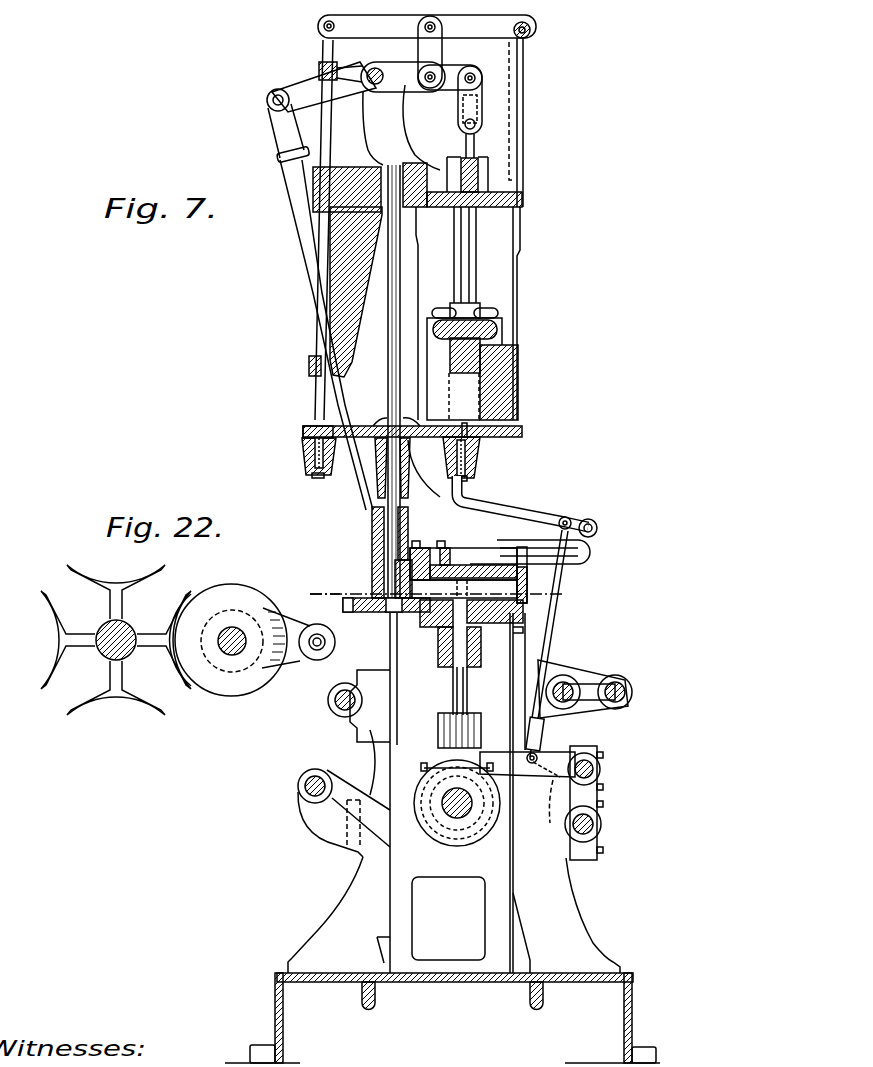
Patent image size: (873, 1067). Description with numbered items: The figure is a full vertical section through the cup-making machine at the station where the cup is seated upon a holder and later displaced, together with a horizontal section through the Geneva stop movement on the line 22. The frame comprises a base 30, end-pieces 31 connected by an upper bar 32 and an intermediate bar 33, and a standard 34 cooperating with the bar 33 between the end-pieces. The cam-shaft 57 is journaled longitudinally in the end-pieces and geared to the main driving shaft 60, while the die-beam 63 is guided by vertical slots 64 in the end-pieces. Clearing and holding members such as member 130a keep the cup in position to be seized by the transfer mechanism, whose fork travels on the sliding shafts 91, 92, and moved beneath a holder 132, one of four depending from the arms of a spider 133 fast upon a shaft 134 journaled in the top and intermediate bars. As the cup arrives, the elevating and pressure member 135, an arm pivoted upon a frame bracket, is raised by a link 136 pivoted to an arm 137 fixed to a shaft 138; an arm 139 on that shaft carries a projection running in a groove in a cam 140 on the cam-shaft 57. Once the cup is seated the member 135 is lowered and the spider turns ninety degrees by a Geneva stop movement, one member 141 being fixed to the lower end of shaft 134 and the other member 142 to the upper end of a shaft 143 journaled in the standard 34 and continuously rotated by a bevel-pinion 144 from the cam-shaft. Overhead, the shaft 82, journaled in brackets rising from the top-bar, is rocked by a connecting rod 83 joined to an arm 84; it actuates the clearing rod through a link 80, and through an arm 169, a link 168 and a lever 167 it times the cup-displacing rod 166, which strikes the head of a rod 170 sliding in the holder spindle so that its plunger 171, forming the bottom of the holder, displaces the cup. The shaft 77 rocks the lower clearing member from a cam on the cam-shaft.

In FIG. 7, the lever 167 is at (551, 19).
In FIG. 7, the link 168 is at (527, 57).
In FIG. 7, the arm 169 is at (400, 88).
In FIG. 7, the shaft 82 is at (361, 72).
In FIG. 7, the arm 84 is at (268, 100).
In FIG. 7, the connecting rod 83 is at (300, 246).
In FIG. 7, the link 80 is at (473, 97).
In FIG. 7, the upper bar 32 is at (523, 203).
In FIG. 7, the vertical slot 64 is at (486, 248).
In FIG. 7, the end-piece 31 is at (505, 296).
In FIG. 7, the clearing and holding member 130a is at (470, 293).
In FIG. 7, the beam 63 is at (521, 382).
In FIG. 7, the shaft 134 is at (386, 336).
In FIG. 22, the shaft 134 is at (122, 662).
In FIG. 7, the rod 166 is at (310, 372).
In FIG. 7, the rod 170 is at (305, 433).
In FIG. 7, the holder 132 is at (303, 457).
In FIG. 7, the disk or plunger 171 is at (306, 478).
In FIG. 7, the spider 133 is at (431, 476).
In FIG. 7, the elevating and pressure member 135 is at (537, 505).
In FIG. 7, the intermediate bar 33 is at (527, 583).
In FIG. 7, the section line 22 is at (452, 604).
In FIG. 22, the section line 22 is at (270, 626).
In FIG. 7, the Geneva stop member 141 is at (367, 600).
In FIG. 22, the Geneva stop member 141 is at (92, 706).
In FIG. 7, the shaft 143 is at (454, 700).
In FIG. 22, the shaft 143 is at (240, 632).
In FIG. 7, the bevel-pinion 144 is at (430, 766).
In FIG. 7, the arm 139 is at (533, 778).
In FIG. 7, the cam 140 is at (438, 840).
In FIG. 7, the arm 137 is at (541, 811).
In FIG. 7, the shaft 138 is at (601, 769).
In FIG. 7, the main driving shaft 60 is at (602, 830).
In FIG. 7, the shaft 91 is at (572, 702).
In FIG. 7, the shaft 92 is at (633, 690).
In FIG. 7, the link 136 is at (541, 648).
In FIG. 7, the shaft 77 is at (329, 703).
In FIG. 7, the cam-shaft 57 is at (470, 818).
In FIG. 7, the standard 34 is at (402, 921).
In FIG. 7, the base 30 is at (636, 1025).
In FIG. 22, the Geneva stop member 142 is at (241, 692).